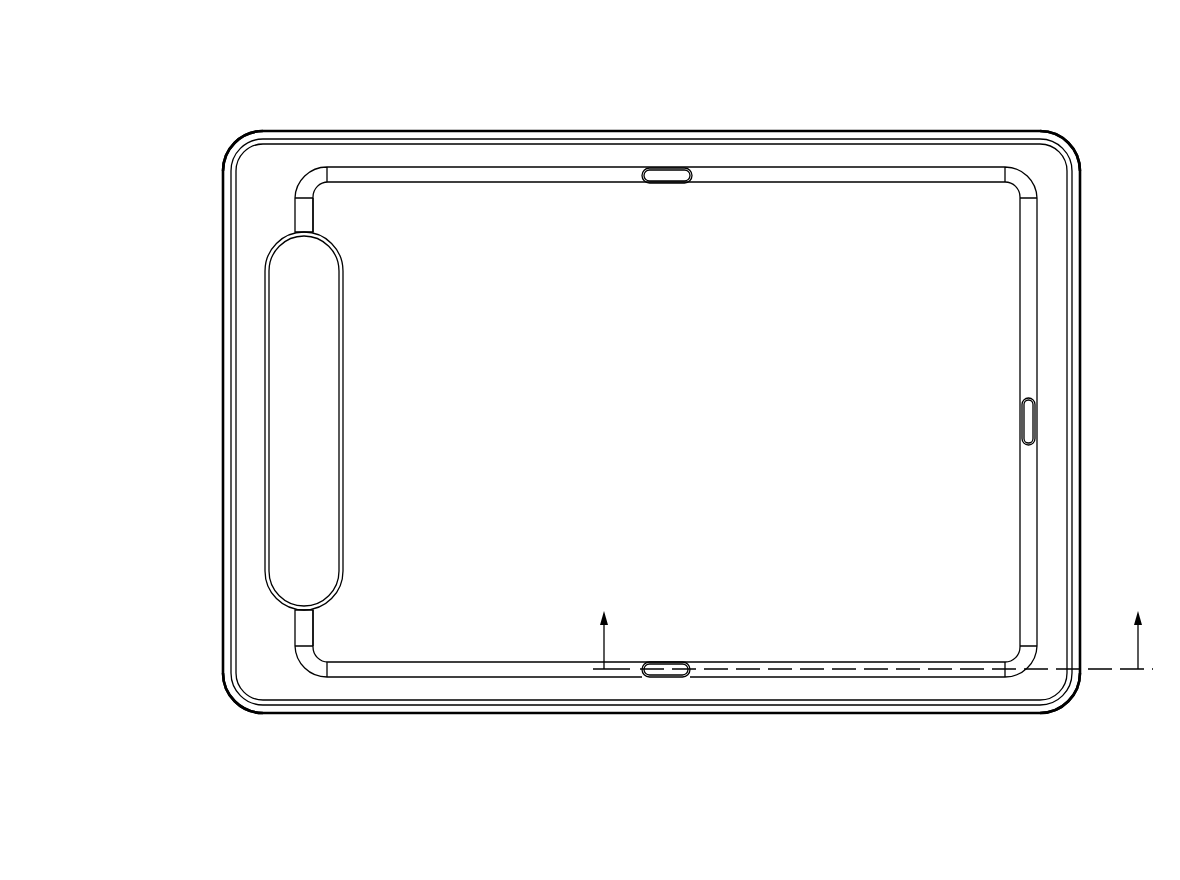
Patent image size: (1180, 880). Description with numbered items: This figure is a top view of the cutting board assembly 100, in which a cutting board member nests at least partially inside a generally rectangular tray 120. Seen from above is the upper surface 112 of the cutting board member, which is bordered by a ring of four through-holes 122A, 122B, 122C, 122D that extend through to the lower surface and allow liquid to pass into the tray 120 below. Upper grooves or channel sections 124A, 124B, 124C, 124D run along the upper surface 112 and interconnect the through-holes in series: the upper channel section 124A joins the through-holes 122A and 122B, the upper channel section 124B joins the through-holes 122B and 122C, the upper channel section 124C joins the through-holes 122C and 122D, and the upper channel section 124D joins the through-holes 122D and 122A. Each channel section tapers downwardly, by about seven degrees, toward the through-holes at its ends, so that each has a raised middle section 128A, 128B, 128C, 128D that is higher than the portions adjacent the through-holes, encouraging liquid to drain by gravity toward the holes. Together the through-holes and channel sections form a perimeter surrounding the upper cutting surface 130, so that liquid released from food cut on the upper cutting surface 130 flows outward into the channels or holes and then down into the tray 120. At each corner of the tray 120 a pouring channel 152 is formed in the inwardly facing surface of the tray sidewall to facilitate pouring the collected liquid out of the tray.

The cutting board assembly 100 is at (818, 67).
The upper surface 112 is at (1047, 517).
The tray 120 is at (1082, 345).
The through-hole 122A is at (268, 427).
The through-hole 122B is at (678, 672).
The through-hole 122C is at (1030, 418).
The through-hole 122D is at (658, 175).
The upper channel section 124A is at (468, 672).
The upper channel section 124B is at (887, 672).
The upper channel section 124C is at (1030, 232).
The upper channel section 124D is at (410, 172).
The section 128A is at (312, 662).
The section 128B is at (1024, 665).
The section 128C is at (1018, 176).
The section 128D is at (304, 178).
The upper cutting surface 130 is at (985, 292).
The pouring channel 152 is at (239, 143).